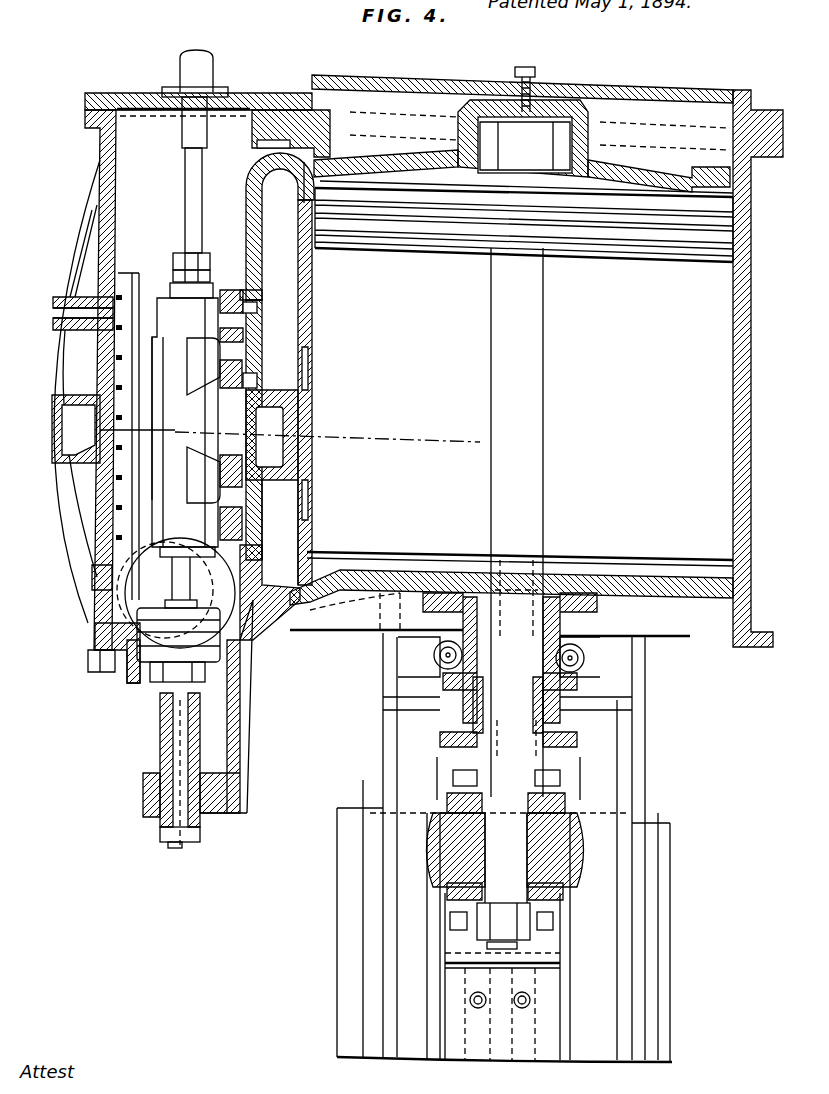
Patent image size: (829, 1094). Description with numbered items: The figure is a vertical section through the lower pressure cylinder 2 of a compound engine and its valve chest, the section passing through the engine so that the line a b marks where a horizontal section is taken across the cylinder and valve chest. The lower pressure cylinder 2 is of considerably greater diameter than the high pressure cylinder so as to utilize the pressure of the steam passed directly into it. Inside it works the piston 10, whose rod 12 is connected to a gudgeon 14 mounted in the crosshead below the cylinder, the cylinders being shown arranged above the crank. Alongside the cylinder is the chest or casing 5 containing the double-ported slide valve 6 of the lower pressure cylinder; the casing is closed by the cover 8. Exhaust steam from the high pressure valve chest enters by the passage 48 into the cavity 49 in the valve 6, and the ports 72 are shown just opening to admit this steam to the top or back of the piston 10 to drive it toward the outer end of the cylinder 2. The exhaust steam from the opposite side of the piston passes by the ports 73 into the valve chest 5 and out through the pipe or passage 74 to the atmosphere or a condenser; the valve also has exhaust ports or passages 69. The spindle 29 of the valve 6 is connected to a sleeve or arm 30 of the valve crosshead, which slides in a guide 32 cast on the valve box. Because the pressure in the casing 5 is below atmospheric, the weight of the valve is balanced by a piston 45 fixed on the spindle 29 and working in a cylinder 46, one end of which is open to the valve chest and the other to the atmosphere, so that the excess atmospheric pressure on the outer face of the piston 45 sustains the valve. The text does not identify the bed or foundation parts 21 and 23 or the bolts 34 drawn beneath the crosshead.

The lower pressure cylinder 2 is at (751, 208).
The valve chest or casing 5 is at (127, 234).
The slide valve 6 is at (173, 377).
The cover 8 is at (95, 463).
The piston 10 is at (655, 240).
The piston rod 12 is at (522, 510).
The gudgeon 14 is at (505, 871).
The bed plate 21 is at (550, 942).
The foundation 23 is at (550, 1054).
The valve spindle 29 is at (185, 587).
The sleeve or arm 30 is at (160, 748).
The guide 32 is at (240, 745).
The bolts 34 is at (448, 655).
The balancing piston 45 is at (178, 635).
The balancing cylinder 46 is at (148, 676).
The passage 48 is at (269, 437).
The valve cavity 49 is at (222, 296).
The exhaust ports or passages 69 is at (203, 420).
The port 72 is at (256, 311).
The port 73 is at (243, 567).
The exhaust pipe or passage 74 is at (95, 577).
The section line point a is at (100, 430).
The section line point b is at (480, 443).